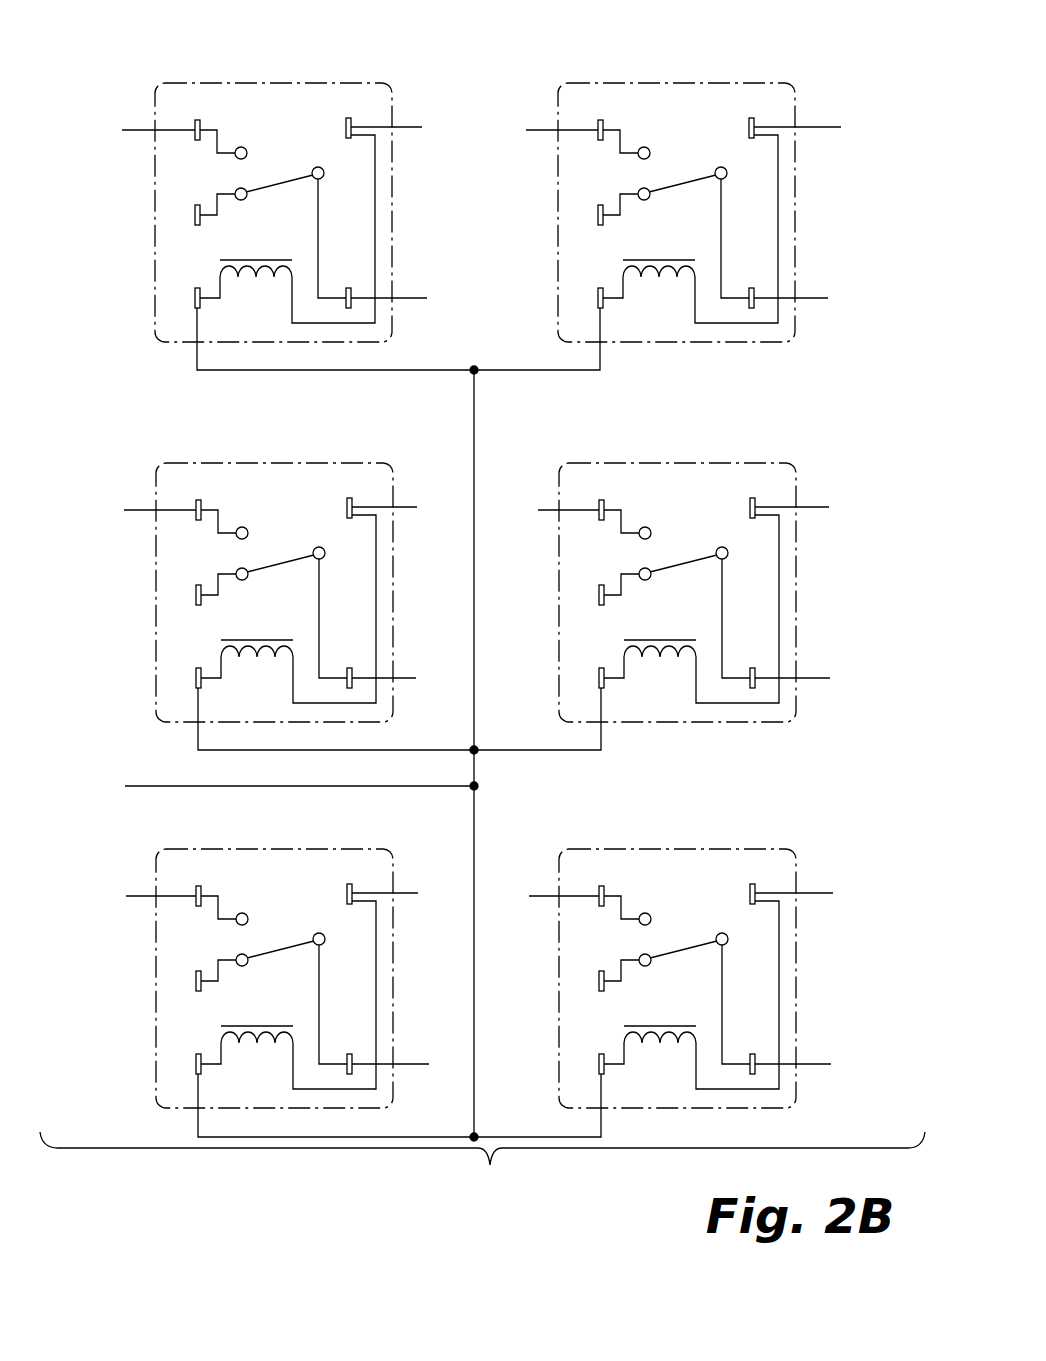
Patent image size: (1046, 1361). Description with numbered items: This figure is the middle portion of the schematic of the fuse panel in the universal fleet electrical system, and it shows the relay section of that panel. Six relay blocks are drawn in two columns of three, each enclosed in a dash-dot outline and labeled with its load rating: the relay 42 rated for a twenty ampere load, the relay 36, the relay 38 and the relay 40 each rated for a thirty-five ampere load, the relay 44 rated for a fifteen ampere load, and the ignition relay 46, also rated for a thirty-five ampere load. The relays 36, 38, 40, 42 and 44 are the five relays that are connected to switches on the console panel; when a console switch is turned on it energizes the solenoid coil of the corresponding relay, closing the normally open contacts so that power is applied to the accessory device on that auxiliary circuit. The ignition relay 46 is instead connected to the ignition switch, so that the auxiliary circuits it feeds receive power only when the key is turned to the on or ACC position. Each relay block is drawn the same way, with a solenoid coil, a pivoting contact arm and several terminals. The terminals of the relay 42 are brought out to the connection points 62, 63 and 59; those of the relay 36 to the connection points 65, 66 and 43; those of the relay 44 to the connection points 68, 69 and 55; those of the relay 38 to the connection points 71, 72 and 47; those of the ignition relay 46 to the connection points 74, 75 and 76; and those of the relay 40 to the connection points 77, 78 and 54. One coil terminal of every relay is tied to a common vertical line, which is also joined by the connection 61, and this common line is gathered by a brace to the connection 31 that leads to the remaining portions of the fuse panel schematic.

The common bus connecting with FIGS. 2A and 2C 31 is at (468, 1178).
The ignition/key-on signal line 61 is at (125, 765).
The relay 42 is at (376, 92).
The relay 36 is at (755, 83).
The relay 44 is at (352, 467).
The relay 38 is at (767, 467).
The ignition relay 46 is at (376, 865).
The relay 40 is at (767, 857).
The relay 4 coil input terminal 62 is at (80, 115).
The relay 4 common contact terminal 63 is at (422, 112).
The relay 4 load output terminal 59 is at (427, 283).
The relay 1 coil input terminal 65 is at (484, 115).
The relay 1 common contact terminal 66 is at (841, 112).
The relay 1 load output terminal 43 is at (828, 282).
The relay 5 coil input terminal 68 is at (82, 496).
The relay 5 common contact terminal 69 is at (417, 493).
The relay 5 load output terminal 55 is at (416, 665).
The relay 2 coil input terminal 71 is at (496, 495).
The relay 2 common contact terminal 72 is at (829, 492).
The relay 2 load output terminal 47 is at (830, 664).
The ignition relay coil input terminal 74 is at (84, 883).
The ignition relay common contact terminal 75 is at (418, 881).
The ignition relay load output terminal 76 is at (429, 1051).
The relay 3 coil input terminal 77 is at (487, 882).
The relay 3 common contact terminal 78 is at (833, 879).
The relay 3 load output terminal 54 is at (831, 1050).